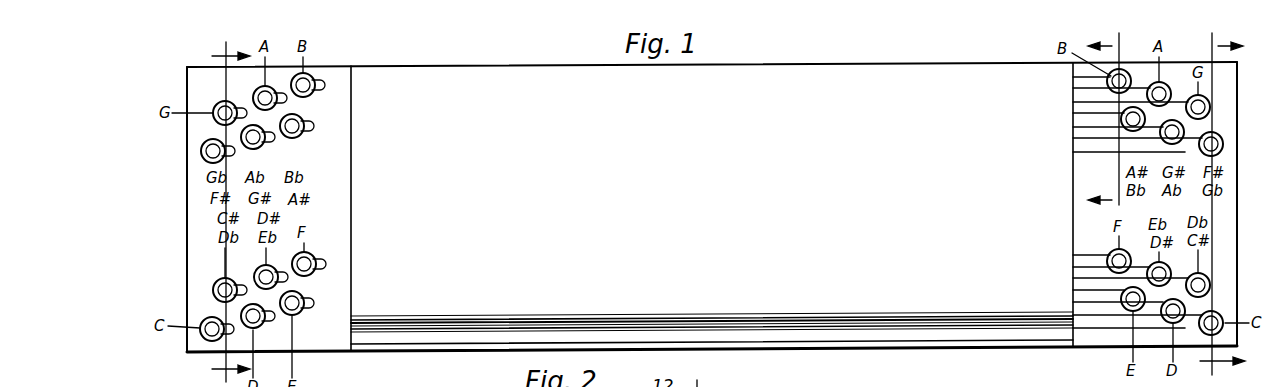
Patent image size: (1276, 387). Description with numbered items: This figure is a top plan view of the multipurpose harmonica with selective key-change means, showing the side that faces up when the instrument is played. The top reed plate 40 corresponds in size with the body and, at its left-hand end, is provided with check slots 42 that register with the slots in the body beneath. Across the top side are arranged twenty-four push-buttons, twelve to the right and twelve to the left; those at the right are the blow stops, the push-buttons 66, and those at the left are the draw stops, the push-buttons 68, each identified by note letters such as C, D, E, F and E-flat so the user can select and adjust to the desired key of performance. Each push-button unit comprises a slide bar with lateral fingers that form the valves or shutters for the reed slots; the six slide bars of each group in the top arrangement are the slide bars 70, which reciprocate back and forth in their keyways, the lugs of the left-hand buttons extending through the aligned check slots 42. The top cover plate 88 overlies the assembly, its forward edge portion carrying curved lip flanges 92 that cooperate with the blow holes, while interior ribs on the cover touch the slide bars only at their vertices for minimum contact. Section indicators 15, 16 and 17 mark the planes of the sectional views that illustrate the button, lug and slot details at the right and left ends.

The section line 15- 15 is at (1211, 207).
The section line 16- 16 is at (222, 210).
The section line 17- 17 is at (1121, 124).
The top reed plate 40 is at (187, 223).
The check slots 42 is at (323, 80).
The push-buttons (blow stops) 66 is at (1209, 104).
The push-buttons (draw stops) 68 is at (217, 106).
The slide bars 70 is at (1076, 80).
The top cover plate 88 is at (849, 72).
The curved lip flanges 92 is at (908, 335).